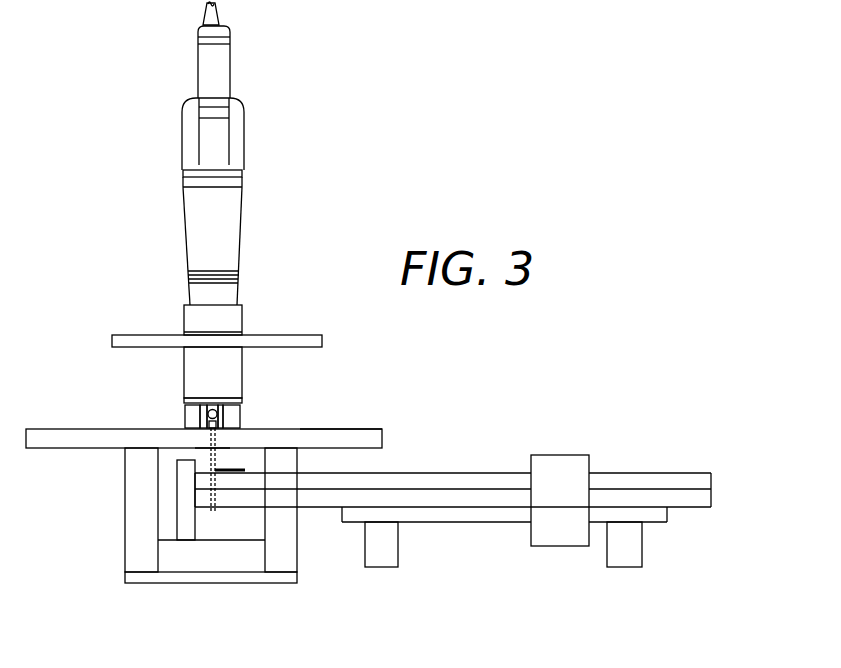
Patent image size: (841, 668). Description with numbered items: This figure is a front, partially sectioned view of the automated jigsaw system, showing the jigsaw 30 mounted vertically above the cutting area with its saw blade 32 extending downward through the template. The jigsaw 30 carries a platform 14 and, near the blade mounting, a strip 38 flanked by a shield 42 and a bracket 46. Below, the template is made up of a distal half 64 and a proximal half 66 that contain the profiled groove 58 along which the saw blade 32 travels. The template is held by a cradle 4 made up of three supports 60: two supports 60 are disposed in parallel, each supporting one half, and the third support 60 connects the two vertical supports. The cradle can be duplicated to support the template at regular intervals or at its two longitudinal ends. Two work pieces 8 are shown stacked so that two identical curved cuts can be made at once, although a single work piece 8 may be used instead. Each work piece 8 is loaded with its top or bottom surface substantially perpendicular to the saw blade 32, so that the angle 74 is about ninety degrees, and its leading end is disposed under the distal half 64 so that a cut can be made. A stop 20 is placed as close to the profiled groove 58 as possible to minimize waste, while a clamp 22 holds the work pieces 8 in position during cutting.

The cradle 4 is at (95, 536).
The work piece 8 is at (712, 481).
The platform 14 is at (147, 335).
The stop 20 is at (177, 505).
The clamp 22 is at (561, 455).
The jigsaw 30 is at (244, 137).
The saw blade 32 is at (213, 510).
The strip 38 is at (188, 410).
The shield 42 is at (200, 421).
The bracket 46 is at (223, 425).
The profiled groove 58 is at (205, 450).
The support 60 is at (125, 493).
The distal half 64 is at (70, 428).
The proximal half 66 is at (347, 428).
The angle 74 is at (217, 470).